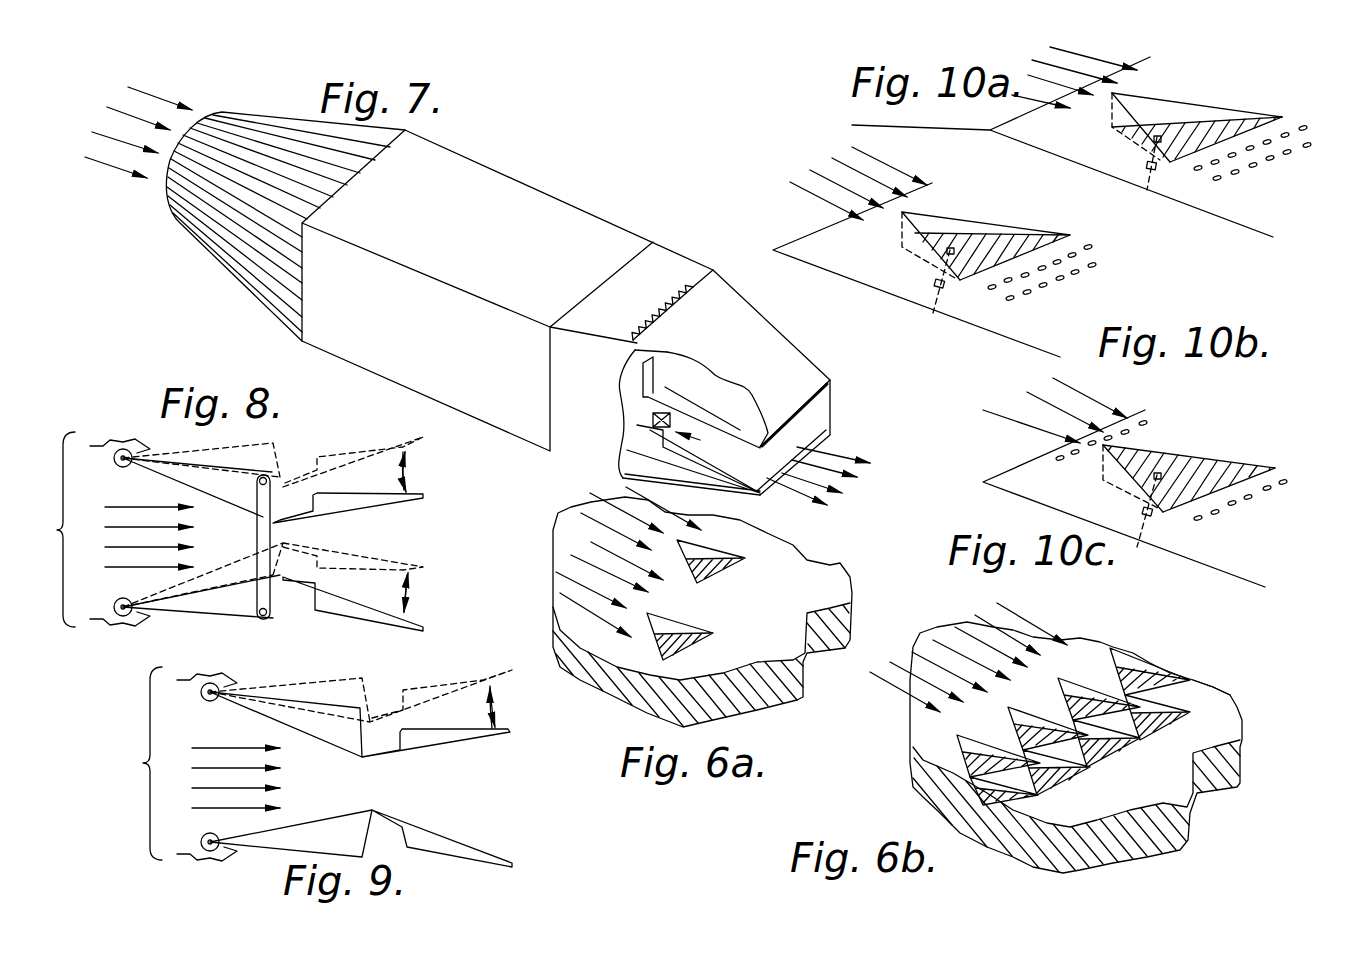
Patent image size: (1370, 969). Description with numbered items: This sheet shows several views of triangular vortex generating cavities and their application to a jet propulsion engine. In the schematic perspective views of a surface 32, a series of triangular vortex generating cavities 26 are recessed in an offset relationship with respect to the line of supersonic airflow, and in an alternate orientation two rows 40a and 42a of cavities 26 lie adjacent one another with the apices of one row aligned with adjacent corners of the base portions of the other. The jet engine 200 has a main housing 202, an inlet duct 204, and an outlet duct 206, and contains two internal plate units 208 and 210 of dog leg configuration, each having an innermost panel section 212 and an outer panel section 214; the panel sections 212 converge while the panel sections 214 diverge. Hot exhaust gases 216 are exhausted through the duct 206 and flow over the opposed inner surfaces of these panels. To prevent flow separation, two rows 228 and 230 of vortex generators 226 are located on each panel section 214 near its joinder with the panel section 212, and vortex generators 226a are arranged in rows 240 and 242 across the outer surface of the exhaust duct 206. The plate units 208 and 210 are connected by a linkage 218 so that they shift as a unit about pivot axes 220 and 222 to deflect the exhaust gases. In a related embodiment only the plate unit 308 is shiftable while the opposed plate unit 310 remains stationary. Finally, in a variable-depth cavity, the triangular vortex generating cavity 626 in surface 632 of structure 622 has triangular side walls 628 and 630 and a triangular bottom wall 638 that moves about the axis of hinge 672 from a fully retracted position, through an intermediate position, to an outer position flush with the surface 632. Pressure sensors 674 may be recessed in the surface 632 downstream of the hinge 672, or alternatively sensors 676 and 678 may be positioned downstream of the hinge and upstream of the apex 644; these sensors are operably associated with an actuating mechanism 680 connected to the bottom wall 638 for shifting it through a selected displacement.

In FIG. 6A, the vortex generating cavities 26 is at (740, 541).
In FIG. 6B, the vortex generating cavities 26 is at (1082, 678).
In FIG. 6A, the surface 32 is at (805, 578).
In FIG. 6B, the surface 32 is at (1220, 720).
In FIG. 6B, the row of cavities 40a is at (1155, 662).
In FIG. 6B, the row of cavities 42a is at (1212, 683).
In FIG. 7, the jet engine 200 is at (566, 188).
In FIG. 7, the main housing 202 is at (445, 175).
In FIG. 7, the inlet duct 204 is at (230, 240).
In FIG. 7, the outlet duct 206 is at (723, 297).
In FIG. 8, the plate unit 208 is at (428, 485).
In FIG. 8, the plate unit 210 is at (435, 627).
In FIG. 8, the innermost panel section 212 is at (168, 477).
In FIG. 7, the outer panel section 214 is at (797, 438).
In FIG. 8, the outer panel section 214 is at (377, 510).
In FIG. 9, the hot exhaust gases 216 is at (174, 756).
In FIG. 8, the linkage 218 is at (285, 487).
In FIG. 8, the pivot axis 220 is at (123, 452).
In FIG. 8, the pivot axis 222 is at (137, 615).
In FIG. 7, the vortex generators 226 is at (816, 484).
In FIG. 7, the vortex generators 226a is at (630, 337).
In FIG. 7, the row of vortex generators 228 is at (647, 407).
In FIG. 7, the row of vortex generators 230 is at (670, 417).
In FIG. 7, the row of vortex generators 240 is at (681, 289).
In FIG. 7, the row of vortex generators 242 is at (707, 286).
In FIG. 9, the plate unit 308 is at (423, 748).
In FIG. 9, the plate unit 310 is at (427, 832).
In FIG. 10A, the structure 622 is at (982, 140).
In FIG. 10A, the vortex generating cavity 626 is at (1186, 92).
In FIG. 10B, the vortex generating cavity 626 is at (958, 206).
In FIG. 10C, the vortex generating cavity 626 is at (1195, 455).
In FIG. 10A, the side wall 628 is at (1115, 130).
In FIG. 10A, the side wall 630 is at (1148, 100).
In FIG. 10A, the surface 632 is at (1262, 215).
In FIG. 10C, the surface 632 is at (1243, 555).
In FIG. 10A, the bottom wall 638 is at (1195, 160).
In FIG. 10B, the bottom wall 638 is at (1013, 240).
In FIG. 10C, the bottom wall 638 is at (1233, 475).
In FIG. 10C, the apex 644 is at (1100, 447).
In FIG. 10A, the hinge 672 is at (1253, 125).
In FIG. 10B, the hinge 672 is at (990, 290).
In FIG. 10C, the hinge 672 is at (1182, 512).
In FIG. 10A, the pressure sensors 674 is at (1265, 167).
In FIG. 10C, the sensors 676 is at (1250, 497).
In FIG. 10C, the sensors 678 is at (1144, 420).
In FIG. 10A, the actuating mechanism 680 is at (1146, 193).
In FIG. 10B, the actuating mechanism 680 is at (932, 312).
In FIG. 10C, the actuating mechanism 680 is at (1137, 549).